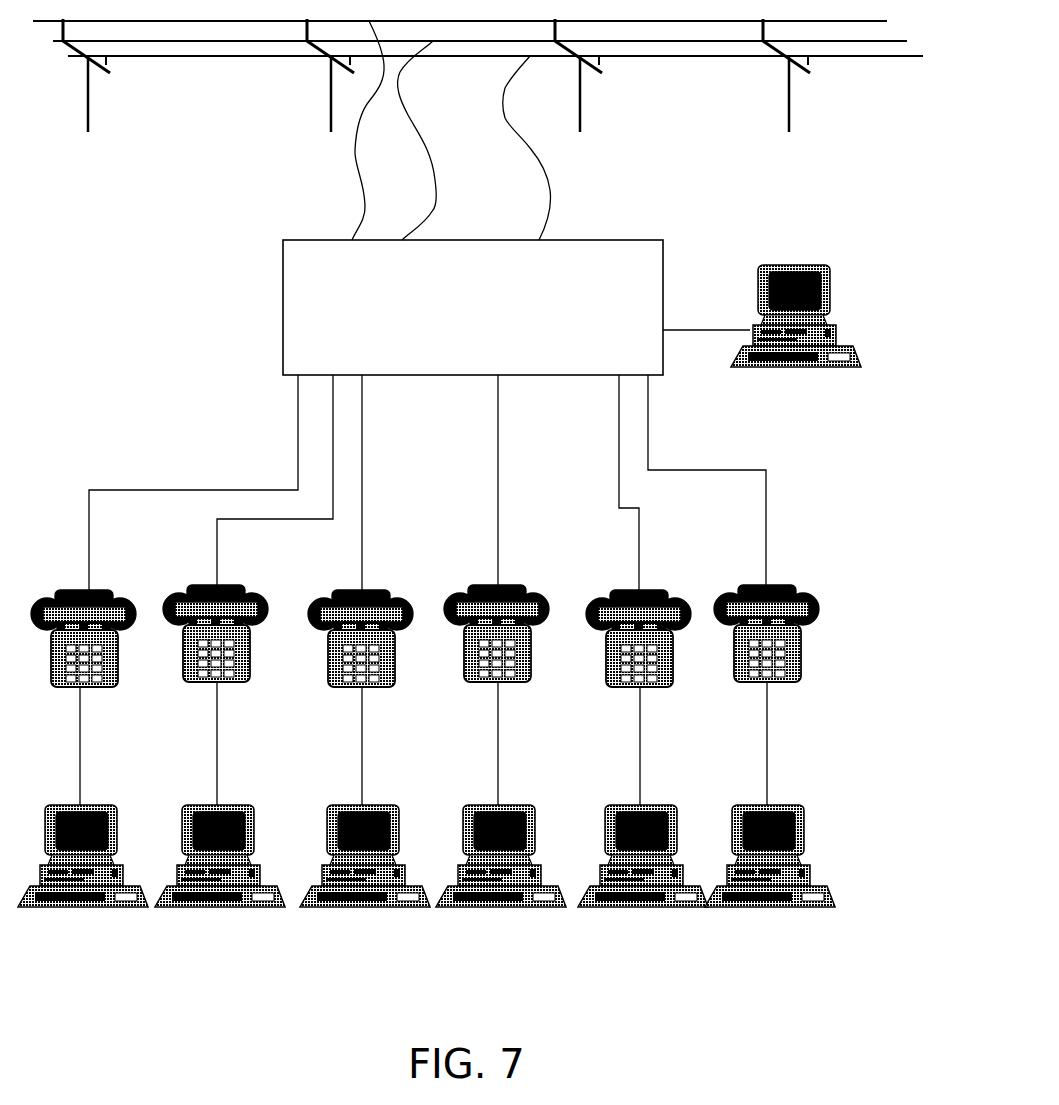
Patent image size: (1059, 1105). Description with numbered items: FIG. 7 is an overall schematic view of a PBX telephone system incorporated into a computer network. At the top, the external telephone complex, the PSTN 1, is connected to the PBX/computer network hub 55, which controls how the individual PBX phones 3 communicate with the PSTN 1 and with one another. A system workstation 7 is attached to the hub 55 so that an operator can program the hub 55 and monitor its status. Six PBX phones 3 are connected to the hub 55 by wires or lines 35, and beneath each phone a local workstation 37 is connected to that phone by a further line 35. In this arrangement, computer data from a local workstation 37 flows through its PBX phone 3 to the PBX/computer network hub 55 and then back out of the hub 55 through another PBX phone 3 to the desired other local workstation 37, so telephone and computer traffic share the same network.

The PSTN 1 is at (204, 60).
The PBX/computer network hub 55 is at (283, 300).
The system workstation 7 is at (757, 265).
The wires or lines 35 is at (298, 460).
The PBX phones 3 is at (242, 587).
The local workstations 37 is at (82, 908).